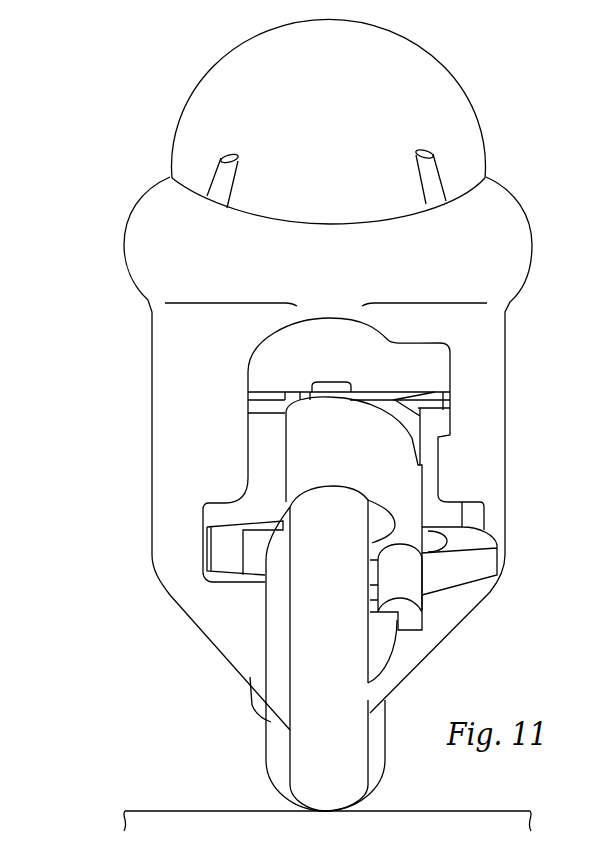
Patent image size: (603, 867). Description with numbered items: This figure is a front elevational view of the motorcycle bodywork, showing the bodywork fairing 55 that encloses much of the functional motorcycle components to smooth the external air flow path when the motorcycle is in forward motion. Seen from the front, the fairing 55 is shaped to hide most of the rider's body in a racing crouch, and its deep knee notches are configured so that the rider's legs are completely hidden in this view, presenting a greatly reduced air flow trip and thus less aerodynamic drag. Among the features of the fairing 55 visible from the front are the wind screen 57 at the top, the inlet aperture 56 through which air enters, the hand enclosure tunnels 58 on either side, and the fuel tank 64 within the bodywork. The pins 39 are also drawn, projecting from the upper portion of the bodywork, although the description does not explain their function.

The wind screen 57 is at (210, 90).
The pins 39 is at (428, 150).
The hand enclosure tunnels 58 is at (127, 280).
The bodywork fairing 55 is at (507, 380).
The inlet aperture 56 is at (275, 368).
The fuel tank 64 is at (242, 645).